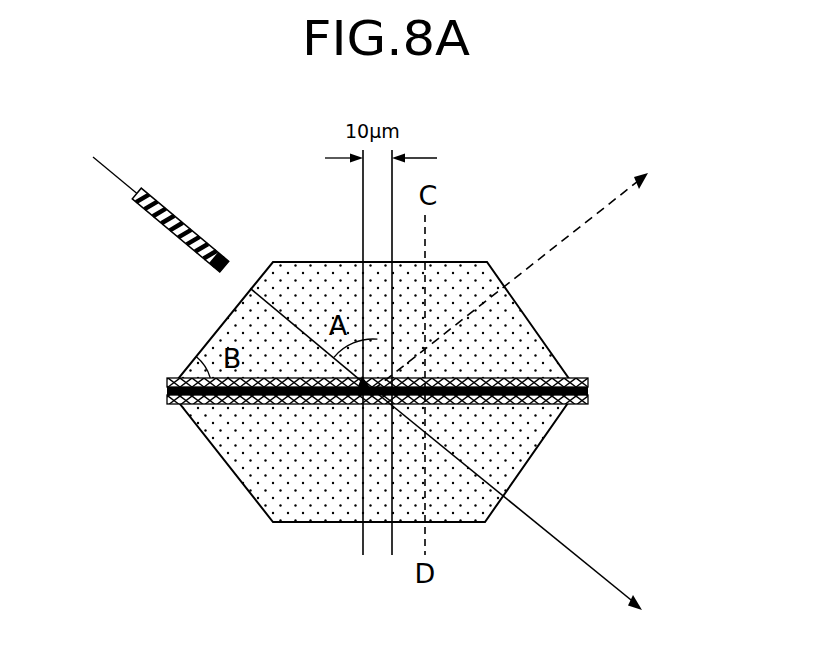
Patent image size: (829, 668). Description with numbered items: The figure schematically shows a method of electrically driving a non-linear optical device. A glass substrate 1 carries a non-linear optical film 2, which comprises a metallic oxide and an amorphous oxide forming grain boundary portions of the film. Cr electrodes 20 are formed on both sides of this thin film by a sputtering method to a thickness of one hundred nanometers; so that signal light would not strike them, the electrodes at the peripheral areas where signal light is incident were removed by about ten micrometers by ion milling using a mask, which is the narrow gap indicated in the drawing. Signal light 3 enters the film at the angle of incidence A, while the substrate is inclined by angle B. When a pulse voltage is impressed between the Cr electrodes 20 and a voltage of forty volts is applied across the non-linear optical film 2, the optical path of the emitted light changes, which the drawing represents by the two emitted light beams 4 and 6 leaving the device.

The glass substrate 1 is at (527, 433).
The non-linear optical film 2 is at (228, 405).
The Cr electrodes 20 is at (188, 380).
The signal light 3 is at (213, 258).
The emitted light 4 is at (509, 500).
The emitted light 6 is at (531, 265).